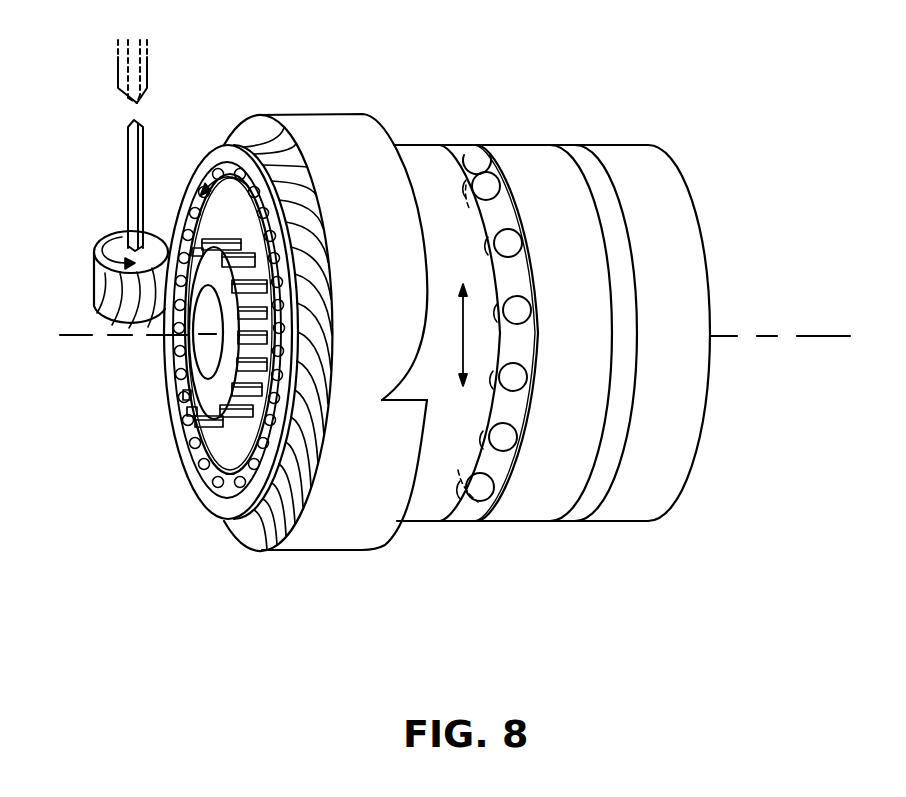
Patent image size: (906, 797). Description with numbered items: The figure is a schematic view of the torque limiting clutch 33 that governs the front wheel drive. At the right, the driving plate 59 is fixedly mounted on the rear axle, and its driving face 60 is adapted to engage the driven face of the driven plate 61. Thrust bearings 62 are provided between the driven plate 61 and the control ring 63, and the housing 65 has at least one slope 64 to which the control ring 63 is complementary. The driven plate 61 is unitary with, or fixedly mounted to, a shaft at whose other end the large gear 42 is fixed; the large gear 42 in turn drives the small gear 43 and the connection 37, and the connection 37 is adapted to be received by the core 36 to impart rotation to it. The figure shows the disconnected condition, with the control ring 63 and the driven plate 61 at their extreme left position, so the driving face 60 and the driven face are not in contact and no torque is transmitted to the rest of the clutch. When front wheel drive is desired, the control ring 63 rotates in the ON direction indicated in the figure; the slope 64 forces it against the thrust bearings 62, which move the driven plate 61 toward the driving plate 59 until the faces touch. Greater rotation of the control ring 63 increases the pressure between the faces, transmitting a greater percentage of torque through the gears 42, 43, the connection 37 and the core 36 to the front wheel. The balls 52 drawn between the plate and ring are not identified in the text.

The torque limiting clutch 33 is at (692, 55).
The core 36 is at (150, 67).
The connection 37 is at (127, 148).
The large gear 42 is at (217, 157).
The small gear 43 is at (110, 298).
The ball ring 52 is at (493, 165).
The driving plate 59 is at (688, 266).
The driving face 60 is at (597, 173).
The driven plate 61 is at (581, 250).
The thrust bearings 62 is at (518, 378).
The control ring 63 is at (458, 208).
The slope 64 is at (395, 372).
The housing 65 is at (388, 205).